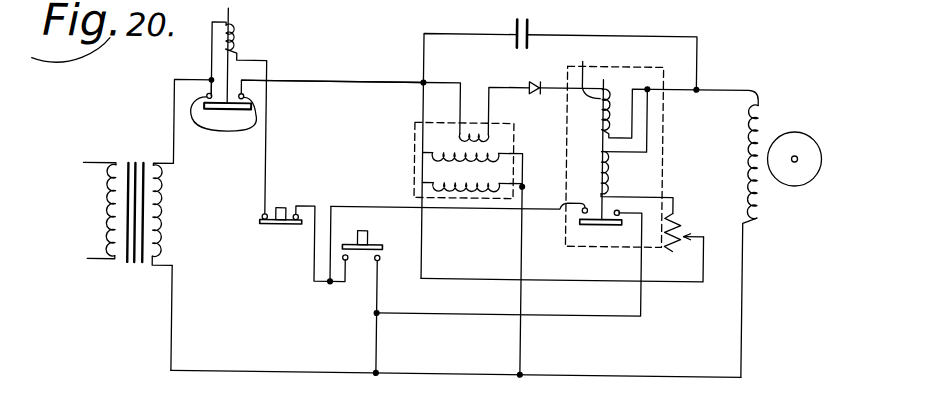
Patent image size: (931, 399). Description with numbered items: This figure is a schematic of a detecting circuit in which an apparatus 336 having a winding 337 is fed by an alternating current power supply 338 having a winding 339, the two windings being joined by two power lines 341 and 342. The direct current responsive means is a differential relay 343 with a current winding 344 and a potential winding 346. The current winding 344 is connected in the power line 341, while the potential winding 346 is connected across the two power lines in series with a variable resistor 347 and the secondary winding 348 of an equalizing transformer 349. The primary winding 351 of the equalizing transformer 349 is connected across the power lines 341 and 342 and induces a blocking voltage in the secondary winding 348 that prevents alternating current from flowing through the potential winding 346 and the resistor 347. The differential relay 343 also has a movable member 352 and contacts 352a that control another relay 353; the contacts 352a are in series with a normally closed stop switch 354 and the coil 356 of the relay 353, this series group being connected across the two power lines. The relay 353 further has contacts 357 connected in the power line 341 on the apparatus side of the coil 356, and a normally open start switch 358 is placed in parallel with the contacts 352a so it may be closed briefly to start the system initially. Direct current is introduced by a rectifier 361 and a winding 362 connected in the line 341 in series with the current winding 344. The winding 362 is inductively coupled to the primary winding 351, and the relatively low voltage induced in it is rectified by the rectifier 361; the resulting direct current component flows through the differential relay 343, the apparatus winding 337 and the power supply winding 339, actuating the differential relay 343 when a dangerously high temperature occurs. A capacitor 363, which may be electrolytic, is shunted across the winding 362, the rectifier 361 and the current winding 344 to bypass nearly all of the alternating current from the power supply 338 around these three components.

The apparatus 336 is at (775, 103).
The winding 337 is at (757, 196).
The alternating current power supply 338 is at (131, 276).
The winding 339 is at (166, 247).
The power line 341 is at (346, 81).
The power line 342 is at (287, 374).
The differential relay 343 is at (639, 61).
The current winding 344 is at (572, 68).
The potential winding 346 is at (607, 173).
The variable resistor 347 is at (675, 219).
The secondary winding 348 is at (463, 190).
The equalizing transformer 349 is at (412, 142).
The primary winding 351 is at (496, 151).
The movable member 352 is at (616, 225).
The contacts 352a is at (612, 219).
The relay 353 is at (239, 43).
The stop switch 354 is at (283, 199).
The coil 356 is at (228, 41).
The contacts 357 is at (306, 116).
The start switch 358 is at (362, 264).
The rectifier 361 is at (527, 81).
The winding 362 is at (470, 134).
The capacitor 363 is at (513, 29).